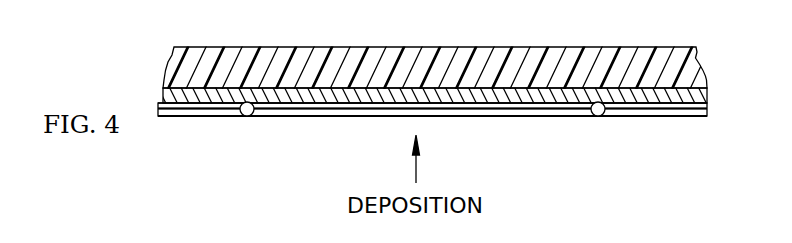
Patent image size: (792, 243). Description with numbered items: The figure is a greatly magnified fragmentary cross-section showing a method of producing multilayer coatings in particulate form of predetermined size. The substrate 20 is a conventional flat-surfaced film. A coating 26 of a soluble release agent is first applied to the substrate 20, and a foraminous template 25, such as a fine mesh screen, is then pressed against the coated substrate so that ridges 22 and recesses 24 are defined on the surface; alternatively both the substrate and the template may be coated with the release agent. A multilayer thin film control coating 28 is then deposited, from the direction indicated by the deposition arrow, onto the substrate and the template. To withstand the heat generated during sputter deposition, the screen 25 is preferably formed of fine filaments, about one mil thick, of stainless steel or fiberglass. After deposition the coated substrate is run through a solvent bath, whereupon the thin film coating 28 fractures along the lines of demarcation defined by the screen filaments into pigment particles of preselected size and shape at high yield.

The substrate 20 is at (685, 62).
The ridges 22 is at (248, 116).
The recesses 24 is at (313, 104).
The foraminous template 25 is at (707, 114).
The coating of soluble release agent 26 is at (707, 95).
The multilayer thin film control coating 28 is at (667, 112).